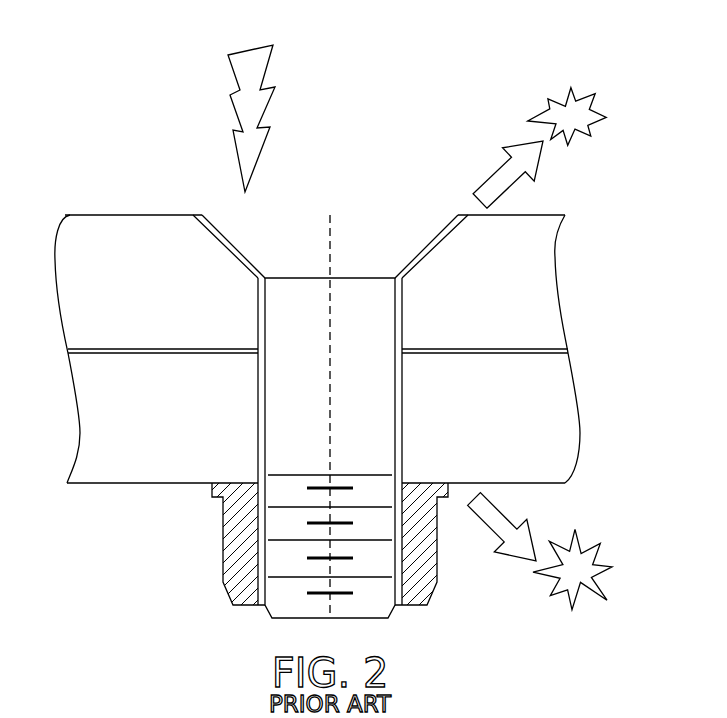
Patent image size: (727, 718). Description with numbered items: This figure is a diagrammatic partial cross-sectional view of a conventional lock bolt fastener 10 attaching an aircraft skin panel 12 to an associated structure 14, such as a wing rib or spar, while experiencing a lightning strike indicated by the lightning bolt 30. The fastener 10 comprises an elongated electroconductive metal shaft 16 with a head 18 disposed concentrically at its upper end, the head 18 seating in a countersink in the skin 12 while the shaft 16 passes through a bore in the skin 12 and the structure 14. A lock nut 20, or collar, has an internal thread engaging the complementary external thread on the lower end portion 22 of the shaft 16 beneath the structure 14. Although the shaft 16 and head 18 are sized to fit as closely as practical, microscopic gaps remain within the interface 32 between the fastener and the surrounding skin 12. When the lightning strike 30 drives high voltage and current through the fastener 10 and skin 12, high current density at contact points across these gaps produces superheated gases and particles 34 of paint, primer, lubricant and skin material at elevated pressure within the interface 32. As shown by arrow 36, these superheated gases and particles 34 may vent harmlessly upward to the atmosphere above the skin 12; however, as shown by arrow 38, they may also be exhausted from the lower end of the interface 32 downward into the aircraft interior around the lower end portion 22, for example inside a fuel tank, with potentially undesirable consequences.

The lock bolt fastener 10 is at (497, 64).
The skin panel 12 is at (543, 270).
The associated structure 14 is at (565, 422).
The shaft 16 is at (278, 325).
The head 18 is at (355, 223).
The lock nut 20 is at (232, 535).
The lower end portion 22 is at (380, 587).
The lightning bolt 30 is at (228, 78).
The interface 32 is at (398, 408).
The superheated gases and particles 34 is at (592, 108).
The arrow 36 is at (483, 182).
The arrow 38 is at (483, 523).